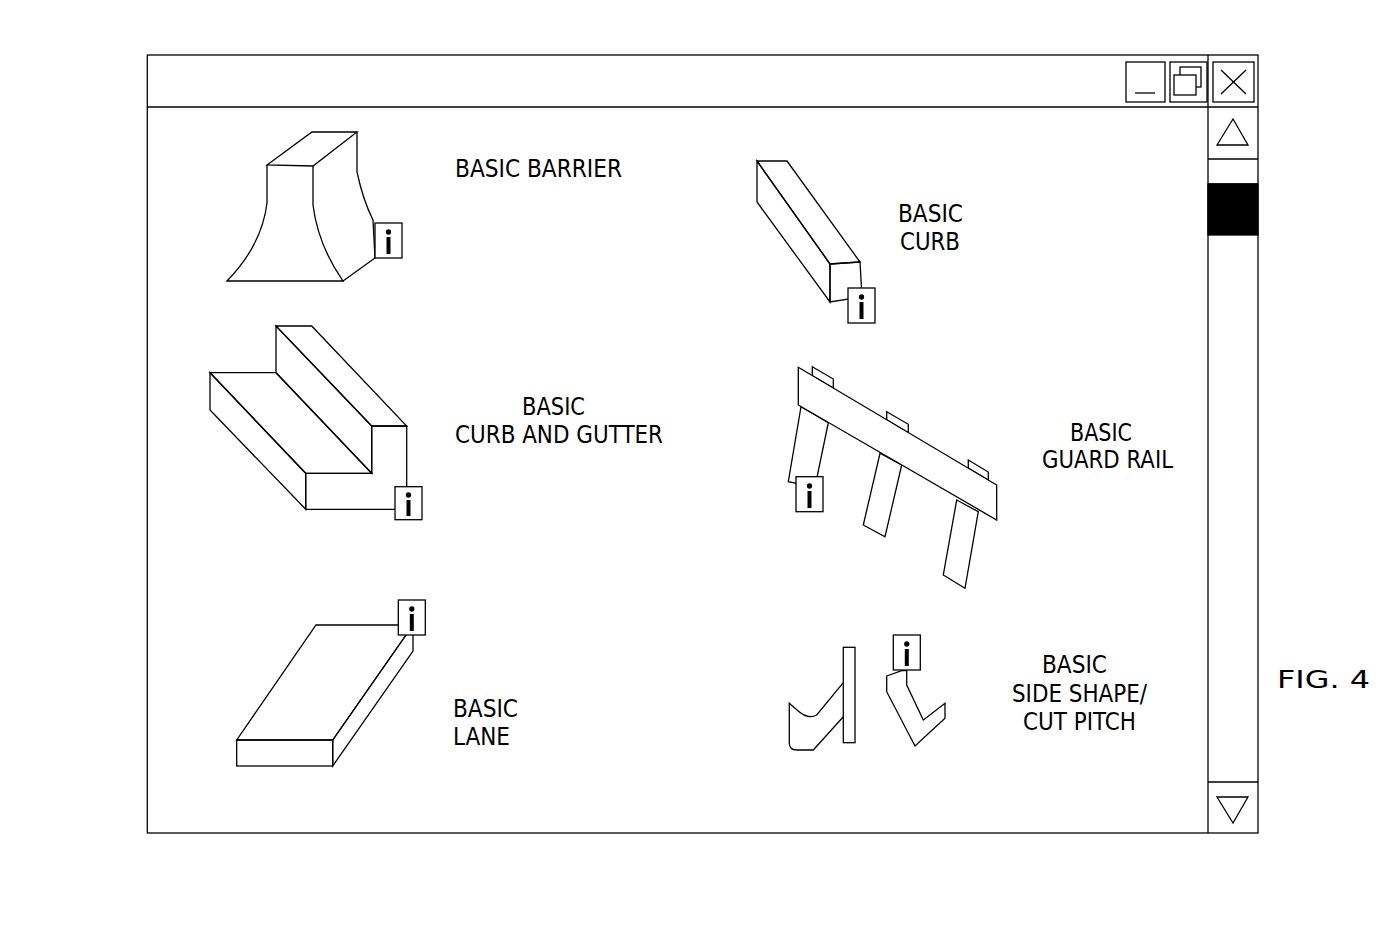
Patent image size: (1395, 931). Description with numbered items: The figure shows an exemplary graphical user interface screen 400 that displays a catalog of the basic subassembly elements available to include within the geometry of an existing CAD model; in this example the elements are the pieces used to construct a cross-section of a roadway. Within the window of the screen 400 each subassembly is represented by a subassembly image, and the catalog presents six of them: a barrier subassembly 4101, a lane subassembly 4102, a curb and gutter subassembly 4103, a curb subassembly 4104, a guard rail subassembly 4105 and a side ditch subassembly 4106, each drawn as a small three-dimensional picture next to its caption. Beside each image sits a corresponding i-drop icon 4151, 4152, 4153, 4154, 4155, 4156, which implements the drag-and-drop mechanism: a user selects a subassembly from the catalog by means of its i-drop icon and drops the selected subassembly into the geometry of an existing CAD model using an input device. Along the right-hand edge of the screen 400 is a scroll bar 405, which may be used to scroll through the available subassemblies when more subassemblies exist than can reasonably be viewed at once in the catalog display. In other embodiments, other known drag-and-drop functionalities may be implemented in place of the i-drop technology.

The graphical user interface screen 400 is at (147, 74).
The scroll bar 405 is at (1258, 296).
The barrier subassembly 4101 is at (255, 236).
The lane subassembly 4102 is at (228, 430).
The curb and gutter subassembly 4103 is at (293, 661).
The curb subassembly 4104 is at (788, 245).
The guard rail subassembly 4105 is at (927, 441).
The side ditch subassembly 4106 is at (833, 698).
The i-drop icon 4151 is at (402, 237).
The i-drop icon 4152 is at (422, 498).
The i-drop icon 4153 is at (425, 612).
The i-drop icon 4154 is at (875, 300).
The i-drop icon 4155 is at (796, 492).
The i-drop icon 4156 is at (920, 648).